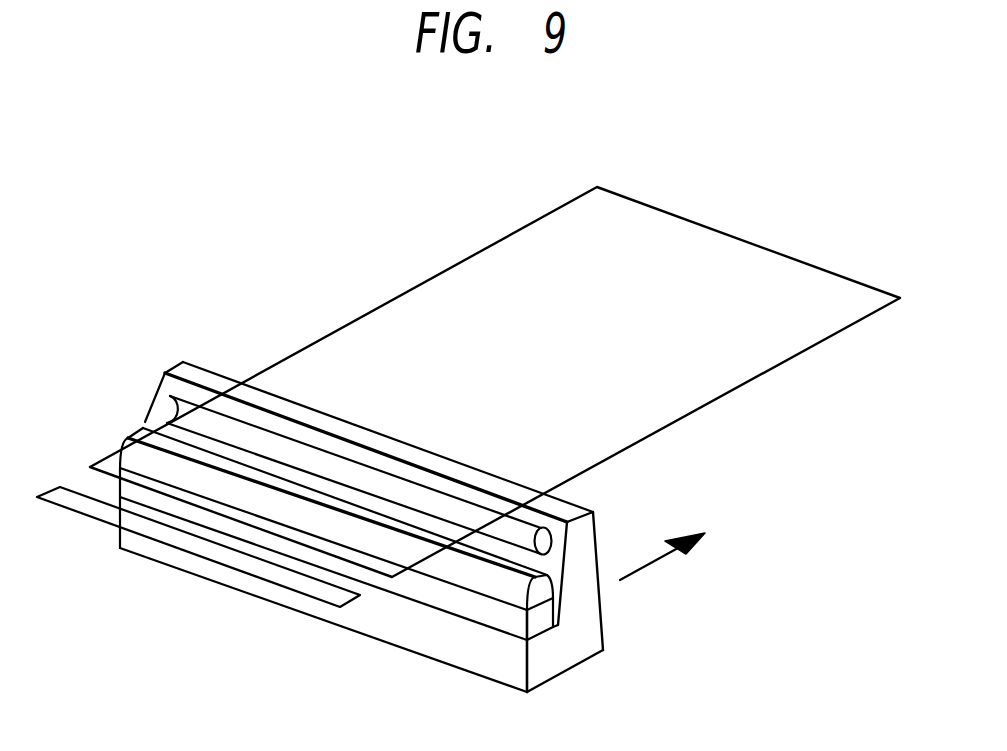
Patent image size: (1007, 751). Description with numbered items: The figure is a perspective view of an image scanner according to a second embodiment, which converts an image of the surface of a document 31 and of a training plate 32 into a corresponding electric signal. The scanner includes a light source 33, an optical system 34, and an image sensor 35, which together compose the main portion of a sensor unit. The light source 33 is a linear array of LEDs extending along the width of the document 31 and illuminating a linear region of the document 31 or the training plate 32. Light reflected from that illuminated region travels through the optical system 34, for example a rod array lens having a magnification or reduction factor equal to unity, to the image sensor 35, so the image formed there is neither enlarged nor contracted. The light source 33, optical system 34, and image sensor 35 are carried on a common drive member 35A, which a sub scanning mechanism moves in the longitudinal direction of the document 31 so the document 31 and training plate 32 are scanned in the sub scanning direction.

The document 31 is at (526, 249).
The training plate 32 is at (193, 546).
The light source 33 is at (177, 408).
The optical system 34 is at (442, 568).
The image sensor 35 is at (487, 615).
The drive member 35A is at (588, 612).